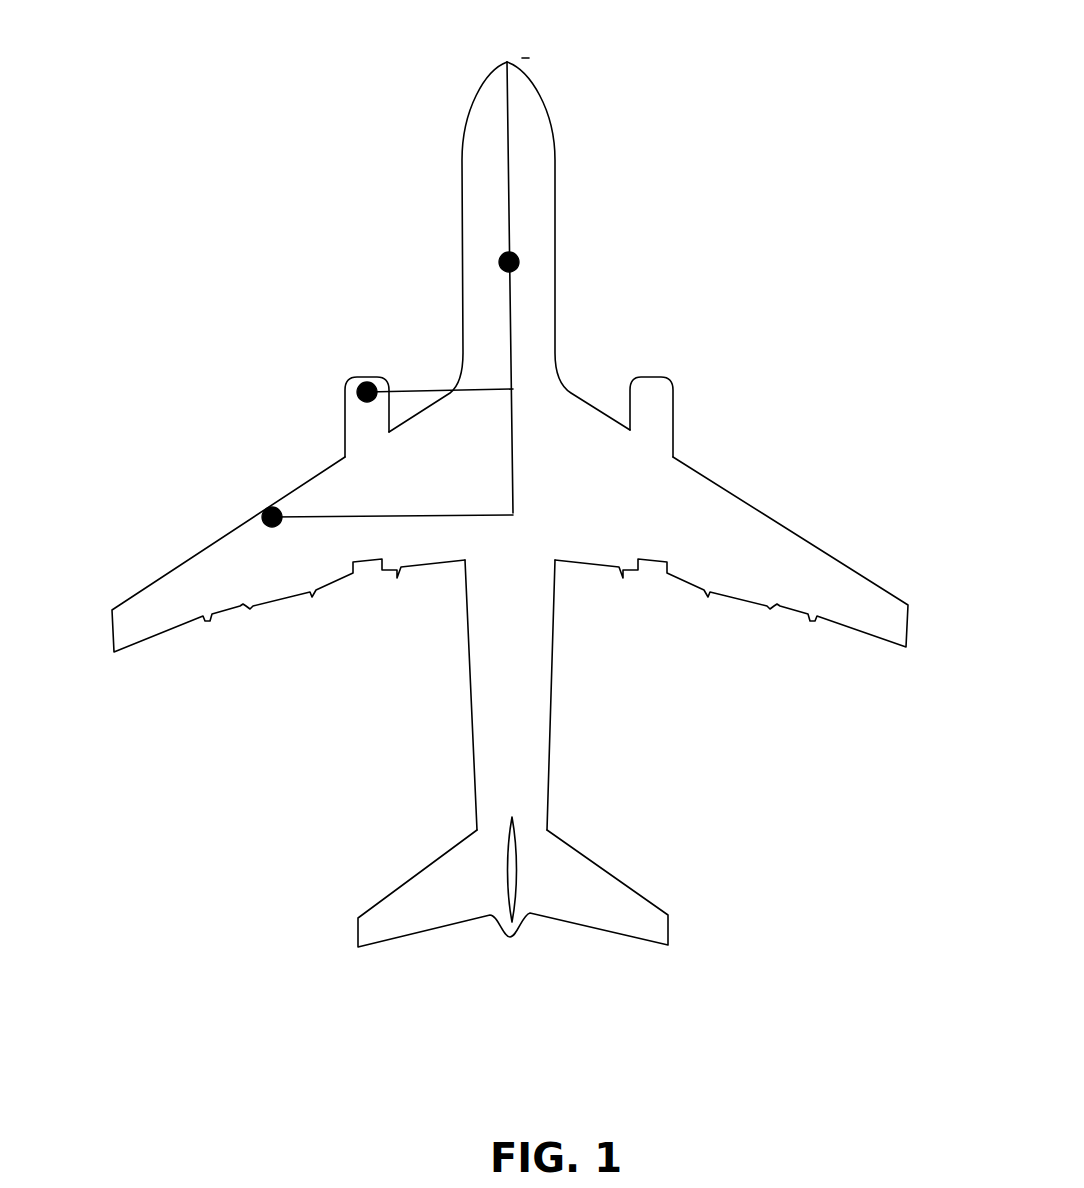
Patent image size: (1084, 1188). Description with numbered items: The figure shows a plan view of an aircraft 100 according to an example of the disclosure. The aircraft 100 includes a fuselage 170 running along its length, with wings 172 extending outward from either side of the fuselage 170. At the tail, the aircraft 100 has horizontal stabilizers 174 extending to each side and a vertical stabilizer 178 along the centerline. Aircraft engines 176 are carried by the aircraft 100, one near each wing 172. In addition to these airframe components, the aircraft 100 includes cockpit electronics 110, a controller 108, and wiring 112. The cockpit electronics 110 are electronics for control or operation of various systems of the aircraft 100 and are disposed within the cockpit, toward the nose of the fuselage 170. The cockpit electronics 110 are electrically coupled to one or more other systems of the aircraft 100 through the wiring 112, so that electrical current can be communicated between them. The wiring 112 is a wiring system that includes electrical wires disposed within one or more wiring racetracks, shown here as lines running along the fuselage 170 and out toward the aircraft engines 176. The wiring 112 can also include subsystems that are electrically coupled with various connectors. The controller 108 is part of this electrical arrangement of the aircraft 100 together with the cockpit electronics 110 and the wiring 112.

The aircraft 100 is at (325, 62).
The controller 108 is at (558, 287).
The cockpit electronics 110 is at (506, 44).
The wiring 112 is at (404, 468).
The fuselage 170 is at (462, 238).
The wings 172 is at (165, 572).
The horizontal stabilizers 174 is at (405, 887).
The aircraft engines 176 is at (350, 377).
The vertical stabilizer 178 is at (506, 872).